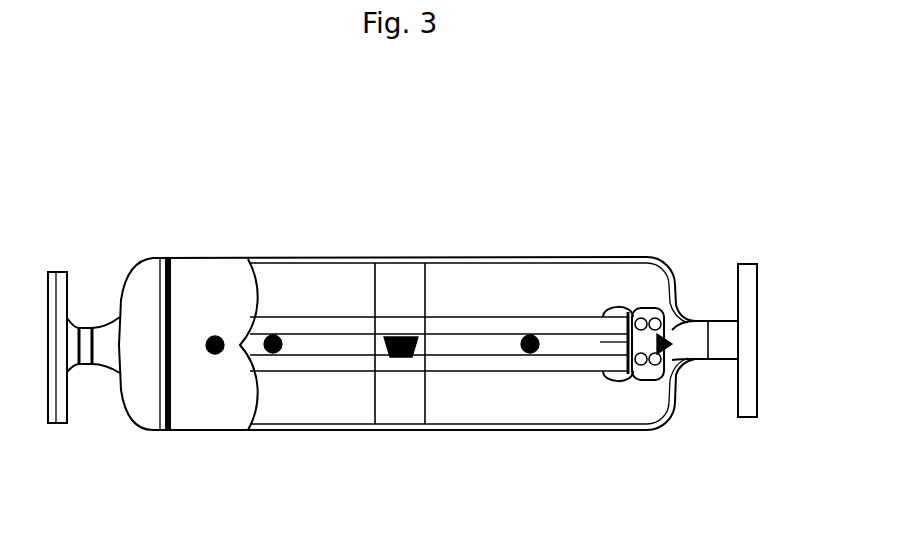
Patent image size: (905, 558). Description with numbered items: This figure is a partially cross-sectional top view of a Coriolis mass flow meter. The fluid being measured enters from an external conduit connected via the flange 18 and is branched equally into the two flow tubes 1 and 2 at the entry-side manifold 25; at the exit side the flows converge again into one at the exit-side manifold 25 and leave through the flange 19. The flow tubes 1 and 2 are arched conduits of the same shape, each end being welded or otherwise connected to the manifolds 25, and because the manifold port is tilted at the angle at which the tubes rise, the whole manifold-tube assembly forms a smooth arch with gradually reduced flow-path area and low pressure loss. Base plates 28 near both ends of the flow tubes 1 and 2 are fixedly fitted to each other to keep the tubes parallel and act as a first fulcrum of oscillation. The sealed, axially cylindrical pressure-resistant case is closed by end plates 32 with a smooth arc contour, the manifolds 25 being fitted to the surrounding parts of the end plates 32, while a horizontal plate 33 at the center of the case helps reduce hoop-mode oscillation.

The flow tube 1 is at (345, 363).
The flow tube 2 is at (283, 315).
The flange 18 is at (62, 413).
The flange 19 is at (747, 410).
The manifold 25 is at (678, 318).
The base plate 28 is at (610, 375).
The end plate 32 is at (143, 267).
The horizontal plate 33 is at (407, 278).